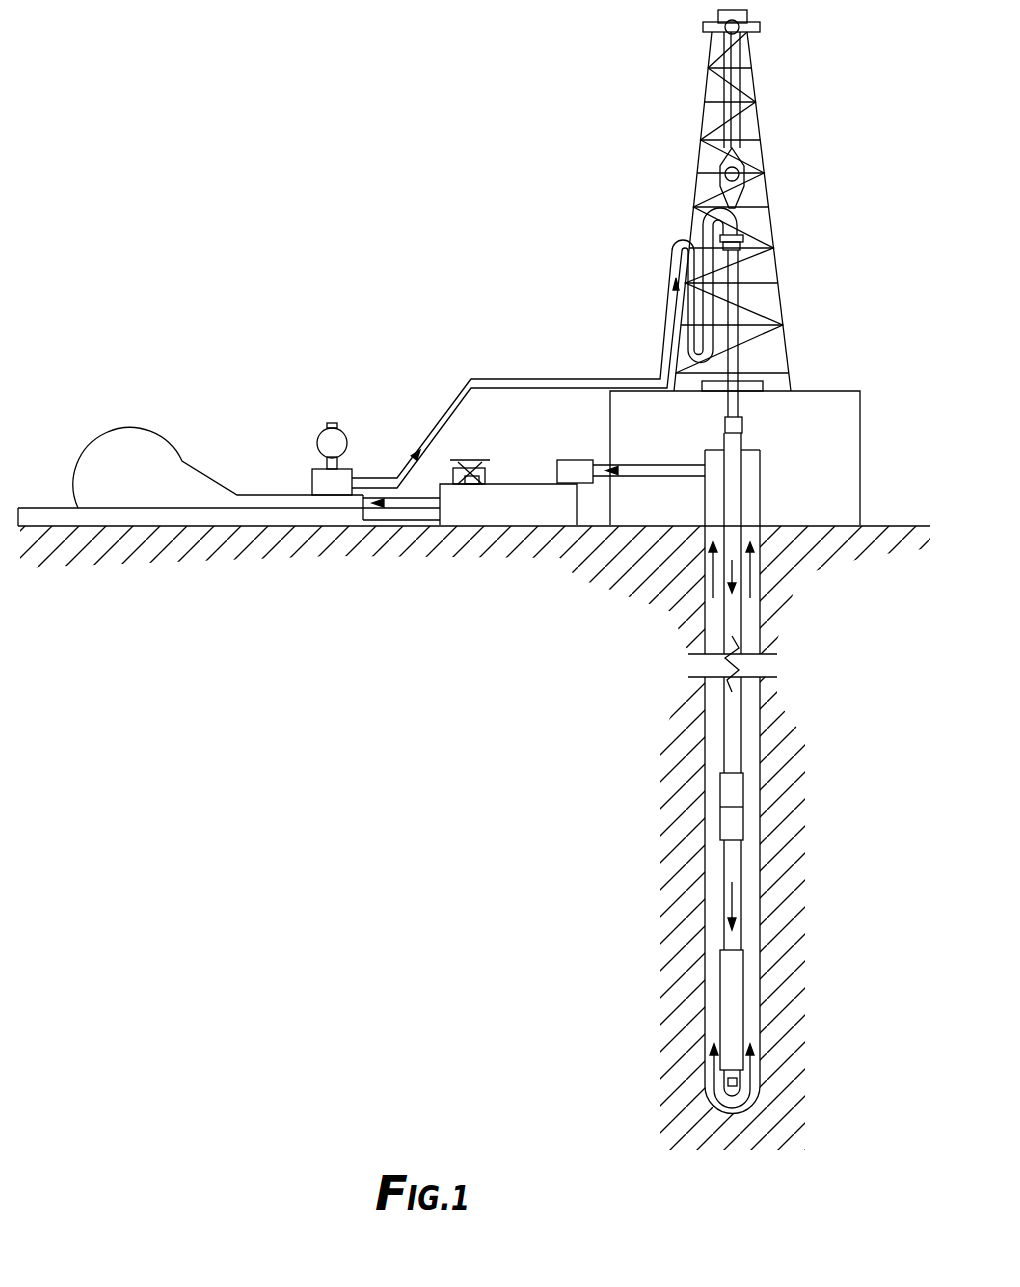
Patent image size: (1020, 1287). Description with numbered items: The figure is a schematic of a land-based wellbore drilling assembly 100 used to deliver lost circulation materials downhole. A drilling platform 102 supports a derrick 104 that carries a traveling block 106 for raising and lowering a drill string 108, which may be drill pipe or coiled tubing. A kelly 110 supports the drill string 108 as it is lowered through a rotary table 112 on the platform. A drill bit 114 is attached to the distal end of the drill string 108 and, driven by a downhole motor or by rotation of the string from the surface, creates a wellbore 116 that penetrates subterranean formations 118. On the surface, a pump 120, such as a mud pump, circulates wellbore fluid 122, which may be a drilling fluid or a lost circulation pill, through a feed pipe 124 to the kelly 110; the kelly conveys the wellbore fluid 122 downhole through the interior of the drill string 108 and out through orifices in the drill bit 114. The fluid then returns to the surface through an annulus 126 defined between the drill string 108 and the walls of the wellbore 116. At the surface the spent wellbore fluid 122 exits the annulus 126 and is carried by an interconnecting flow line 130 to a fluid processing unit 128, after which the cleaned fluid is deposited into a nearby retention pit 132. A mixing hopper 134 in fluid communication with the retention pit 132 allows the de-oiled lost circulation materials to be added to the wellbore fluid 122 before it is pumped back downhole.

The wellbore drilling assembly 100 is at (436, 98).
The drilling platform 102 is at (862, 402).
The derrick 104 is at (763, 118).
The traveling block 106 is at (748, 160).
The drill string 108 is at (762, 640).
The kelly 110 is at (735, 296).
The rotary table 112 is at (765, 386).
The drill bit 114 is at (760, 1083).
The wellbore 116 is at (762, 736).
The subterranean formations 118 is at (632, 785).
The pump 120 is at (150, 490).
The wellbore fluid 122 is at (372, 478).
The feed pipe 124 is at (494, 380).
The annulus 126 is at (745, 905).
The fluid processing unit 128 is at (574, 462).
The flow line 130 is at (704, 478).
The retention pit 132 is at (552, 512).
The mixing hopper 134 is at (456, 463).